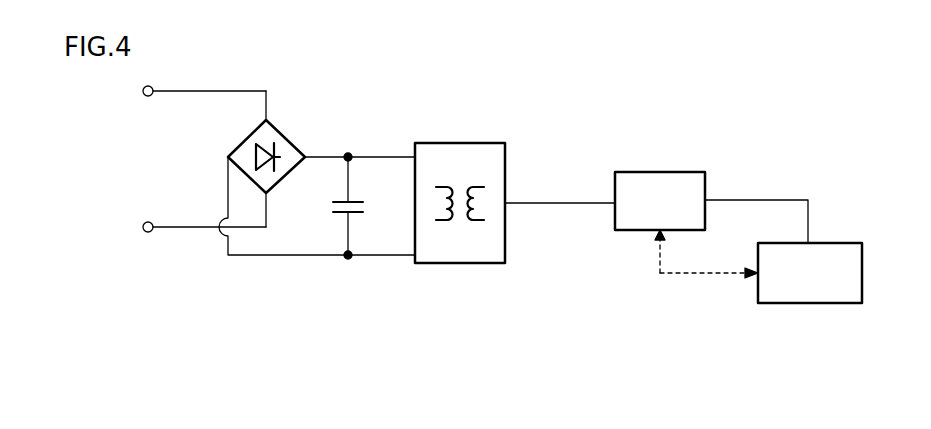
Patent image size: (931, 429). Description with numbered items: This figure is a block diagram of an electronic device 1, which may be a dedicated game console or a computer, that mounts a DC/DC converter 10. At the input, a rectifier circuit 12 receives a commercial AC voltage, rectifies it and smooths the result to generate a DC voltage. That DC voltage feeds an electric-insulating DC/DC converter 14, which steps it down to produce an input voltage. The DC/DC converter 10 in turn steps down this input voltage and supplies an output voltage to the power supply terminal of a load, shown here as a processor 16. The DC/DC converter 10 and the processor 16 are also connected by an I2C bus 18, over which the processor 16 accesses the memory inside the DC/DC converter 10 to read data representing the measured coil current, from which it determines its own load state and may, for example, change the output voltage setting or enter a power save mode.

The electronic device 1 is at (494, 397).
The rectifier circuit 12 is at (355, 279).
The electric-insulating DC/DC converter 14 is at (458, 143).
The DC/DC converter 10 is at (660, 172).
The processor 16 is at (840, 243).
The I2C bus 18 is at (675, 276).